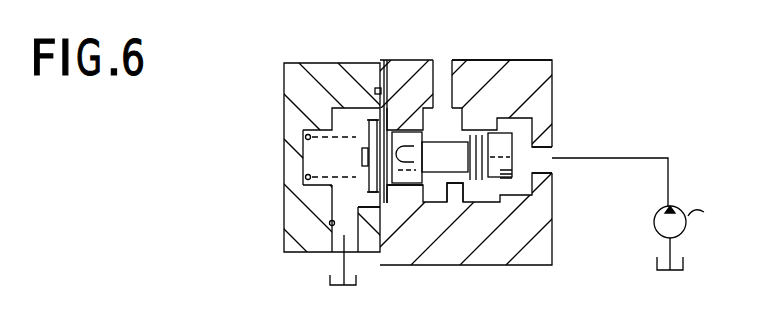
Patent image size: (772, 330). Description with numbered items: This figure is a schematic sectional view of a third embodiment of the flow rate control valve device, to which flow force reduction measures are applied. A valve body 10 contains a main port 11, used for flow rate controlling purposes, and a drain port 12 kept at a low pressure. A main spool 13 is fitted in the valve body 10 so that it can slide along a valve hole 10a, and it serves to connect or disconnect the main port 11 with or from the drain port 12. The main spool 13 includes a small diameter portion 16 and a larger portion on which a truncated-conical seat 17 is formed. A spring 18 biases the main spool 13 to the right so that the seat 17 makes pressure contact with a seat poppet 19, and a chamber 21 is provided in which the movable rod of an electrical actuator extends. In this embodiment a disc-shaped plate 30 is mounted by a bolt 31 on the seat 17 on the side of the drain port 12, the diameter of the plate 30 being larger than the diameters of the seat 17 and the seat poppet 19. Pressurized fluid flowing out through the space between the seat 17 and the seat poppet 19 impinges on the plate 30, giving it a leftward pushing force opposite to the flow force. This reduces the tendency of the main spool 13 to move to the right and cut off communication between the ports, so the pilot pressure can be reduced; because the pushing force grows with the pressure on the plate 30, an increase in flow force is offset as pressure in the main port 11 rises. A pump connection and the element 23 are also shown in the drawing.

The valve body 10 is at (553, 67).
The valve hole 10a is at (476, 190).
The main port 11 is at (418, 108).
The drain port 12 is at (330, 223).
The main spool 13 is at (458, 60).
The small diameter portion 16 is at (452, 190).
The seat 17 is at (389, 188).
The spring 18 is at (303, 130).
The seat poppet 19 is at (383, 100).
The chamber 21 is at (530, 205).
The valve spool 23 is at (422, 157).
The disc-shaped plate 30 is at (348, 110).
The bolt 31 is at (364, 160).